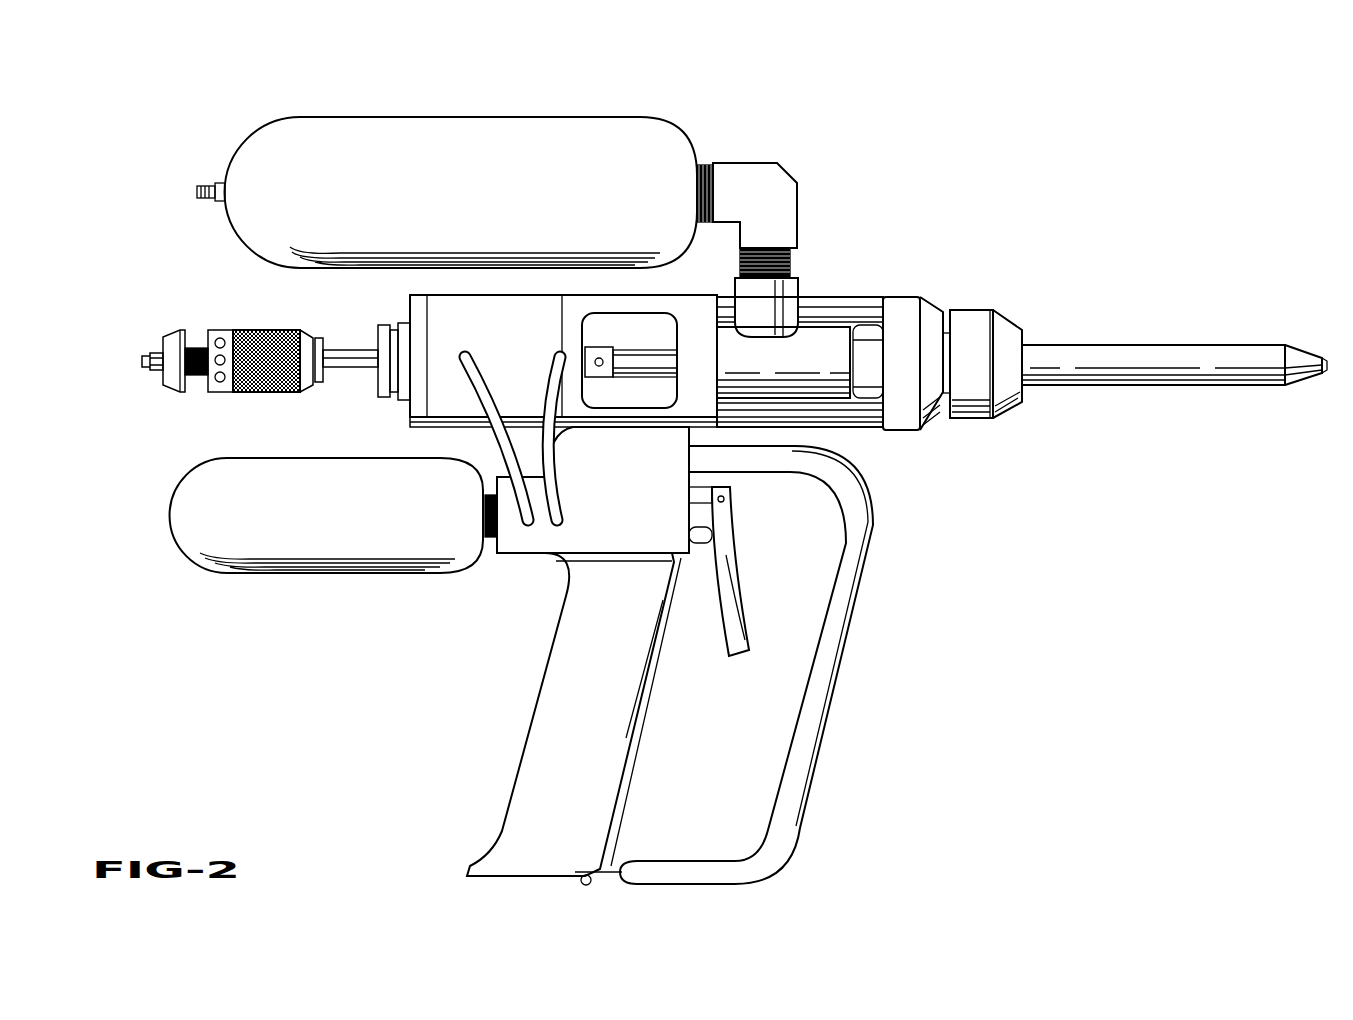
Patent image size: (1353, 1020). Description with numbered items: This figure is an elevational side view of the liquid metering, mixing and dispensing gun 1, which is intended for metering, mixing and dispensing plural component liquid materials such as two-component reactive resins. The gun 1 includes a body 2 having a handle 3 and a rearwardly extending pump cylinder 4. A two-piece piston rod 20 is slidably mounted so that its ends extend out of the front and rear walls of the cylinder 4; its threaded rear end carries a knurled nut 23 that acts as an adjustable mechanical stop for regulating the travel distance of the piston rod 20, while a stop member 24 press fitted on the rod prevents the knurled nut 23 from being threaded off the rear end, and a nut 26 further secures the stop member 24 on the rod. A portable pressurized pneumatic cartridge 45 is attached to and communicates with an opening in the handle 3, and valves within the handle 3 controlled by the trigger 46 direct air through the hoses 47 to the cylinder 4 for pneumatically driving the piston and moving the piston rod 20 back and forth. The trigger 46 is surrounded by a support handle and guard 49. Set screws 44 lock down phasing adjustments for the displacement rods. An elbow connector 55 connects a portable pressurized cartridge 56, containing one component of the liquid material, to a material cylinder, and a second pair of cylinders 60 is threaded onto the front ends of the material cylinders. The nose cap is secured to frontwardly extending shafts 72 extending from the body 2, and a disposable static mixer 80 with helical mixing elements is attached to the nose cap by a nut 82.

The liquid metering, mixing and dispensing gun 1 is at (1012, 438).
The body 2 is at (643, 429).
The handle 3 is at (543, 672).
The pump cylinder 4 is at (408, 415).
The piston rod 20 is at (357, 350).
The knurled nut 23 is at (277, 332).
The stop member 24 is at (172, 335).
The nut 26 is at (158, 372).
The set screws 44 is at (601, 358).
The pressurized pneumatic cartridge 45 is at (387, 573).
The trigger 46 is at (738, 607).
The hoses 47 is at (543, 383).
The support handle and guard 49 is at (820, 738).
The elbow connector 55 is at (787, 173).
The pressurized cartridge 56 is at (477, 118).
The second pair of cylinders 60 is at (815, 350).
The frontwardly extending shafts 72 is at (862, 300).
The disposable static mixer 80 is at (1140, 343).
The nut 82 is at (1008, 320).